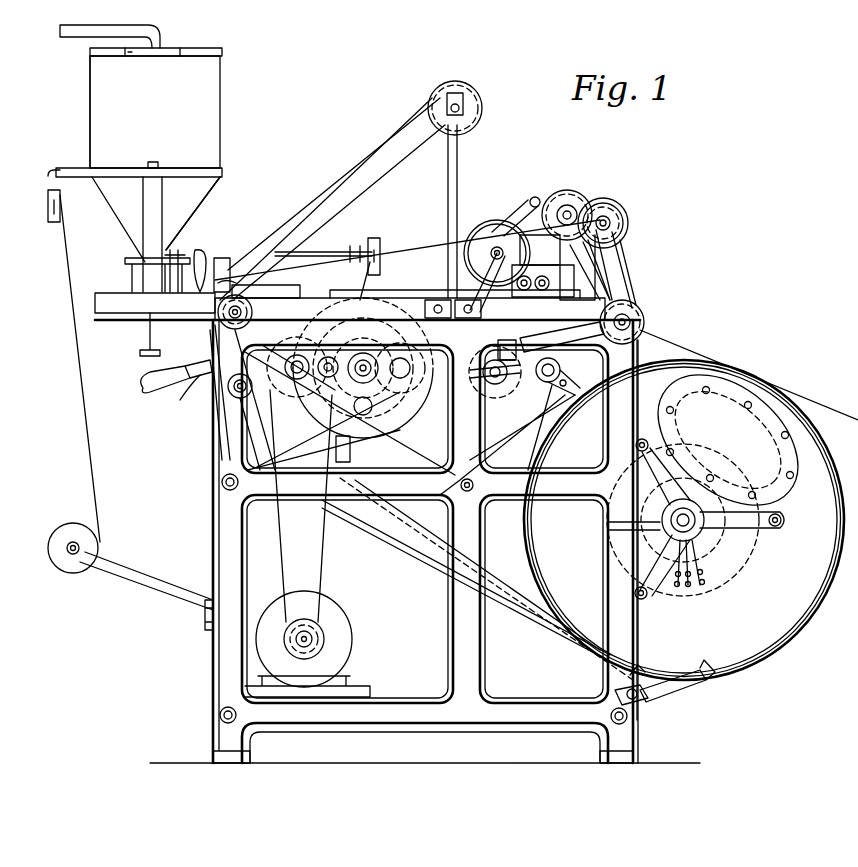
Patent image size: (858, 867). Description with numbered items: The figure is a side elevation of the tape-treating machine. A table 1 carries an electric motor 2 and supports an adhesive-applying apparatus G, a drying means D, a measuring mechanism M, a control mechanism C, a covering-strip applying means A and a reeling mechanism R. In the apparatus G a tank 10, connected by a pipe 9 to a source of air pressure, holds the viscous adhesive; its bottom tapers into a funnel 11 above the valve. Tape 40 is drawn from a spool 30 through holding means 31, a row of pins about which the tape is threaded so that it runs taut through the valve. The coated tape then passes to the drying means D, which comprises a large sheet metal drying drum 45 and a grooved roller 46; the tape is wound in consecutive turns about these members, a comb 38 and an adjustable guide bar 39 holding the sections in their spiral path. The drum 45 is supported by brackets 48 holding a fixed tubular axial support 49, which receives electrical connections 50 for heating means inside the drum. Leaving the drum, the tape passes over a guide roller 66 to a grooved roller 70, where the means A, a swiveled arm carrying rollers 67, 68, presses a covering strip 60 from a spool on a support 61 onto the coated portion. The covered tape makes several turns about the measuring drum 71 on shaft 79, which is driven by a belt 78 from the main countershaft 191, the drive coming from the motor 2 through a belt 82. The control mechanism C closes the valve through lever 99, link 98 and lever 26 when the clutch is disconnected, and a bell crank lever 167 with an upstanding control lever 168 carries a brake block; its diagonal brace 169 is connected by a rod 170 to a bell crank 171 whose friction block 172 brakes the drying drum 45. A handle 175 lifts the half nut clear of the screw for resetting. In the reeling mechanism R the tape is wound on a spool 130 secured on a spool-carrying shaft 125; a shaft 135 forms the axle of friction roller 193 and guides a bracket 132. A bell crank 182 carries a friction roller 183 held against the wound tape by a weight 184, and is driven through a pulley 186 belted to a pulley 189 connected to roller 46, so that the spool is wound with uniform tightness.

The table 1 is at (212, 646).
The electric motor 2 is at (330, 642).
The pipe 9 is at (60, 32).
The tank 10 is at (88, 97).
The apparatus for applying adhesive G is at (168, 112).
The funnel 11 is at (210, 195).
The lever 26 is at (128, 262).
The spool of tape 30 is at (60, 570).
The holding means 31 is at (50, 188).
The comb 38 is at (575, 380).
The guide bar 39 is at (558, 410).
The tape 40 is at (445, 240).
The drying drum 45 is at (760, 642).
The grooved roller 46 is at (640, 340).
The brackets 48 is at (700, 540).
The tubular axial support 49 is at (745, 535).
The electrical connections 50 is at (692, 585).
The covering strip 60 is at (390, 135).
The support 61 is at (458, 175).
The guide roller 66 is at (290, 382).
The roller 67 is at (240, 284).
The roller 68 is at (222, 258).
The roller 70 is at (253, 312).
The measuring drum 71 is at (400, 298).
The belt 78 is at (363, 379).
The shaft 79 is at (362, 415).
The belt 82 is at (288, 562).
The link 98 is at (178, 248).
The lever 99 is at (375, 240).
The spool-carrying shaft 125 is at (560, 200).
The spool 130 is at (572, 190).
The bracket 132 is at (605, 270).
The shaft 135 is at (490, 232).
The bell crank lever 167 is at (210, 420).
The control lever 168 is at (204, 250).
The diagonal brace 169 is at (341, 402).
The rod 170 is at (430, 575).
The bell crank 171 is at (610, 694).
The friction block 172 is at (700, 690).
The handle 175 is at (145, 390).
The bell crank 182 is at (615, 265).
The friction roller 183 is at (598, 195).
The weight 184 is at (540, 345).
The driving pulley 186 is at (645, 318).
The pulley 189 is at (620, 218).
The main countershaft 191 is at (505, 382).
The friction roller 193 is at (496, 222).
The means for applying the covering strip A is at (326, 199).
The control mechanism C is at (179, 395).
The drying means D is at (684, 518).
The measuring mechanism M is at (387, 252).
The reeling mechanism R is at (618, 200).